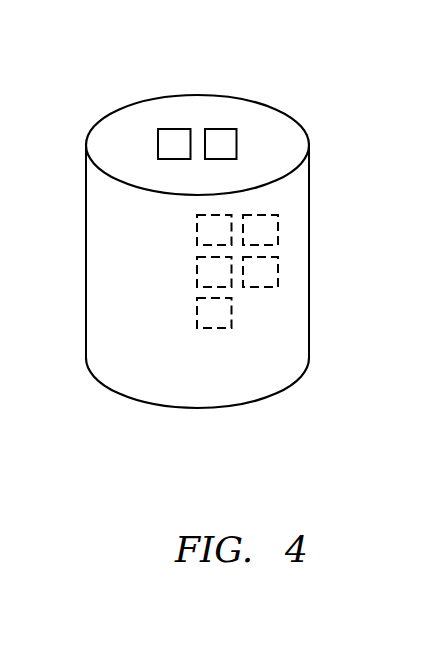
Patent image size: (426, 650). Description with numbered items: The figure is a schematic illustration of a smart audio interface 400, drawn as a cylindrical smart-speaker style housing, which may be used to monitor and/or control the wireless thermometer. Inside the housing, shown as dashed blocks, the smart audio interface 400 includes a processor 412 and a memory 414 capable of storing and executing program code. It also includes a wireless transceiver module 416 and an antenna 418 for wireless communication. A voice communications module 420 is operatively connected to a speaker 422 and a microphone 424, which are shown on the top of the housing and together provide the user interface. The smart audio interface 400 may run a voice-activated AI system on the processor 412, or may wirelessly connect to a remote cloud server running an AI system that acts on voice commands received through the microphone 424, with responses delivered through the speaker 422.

The smart audio interface 400 is at (310, 350).
The processor 412 is at (197, 238).
The memory 414 is at (278, 238).
The wireless transceiver module 416 is at (278, 277).
The antenna 418 is at (197, 265).
The voice communications module 420 is at (197, 318).
The speaker 422 is at (170, 129).
The microphone 424 is at (222, 129).